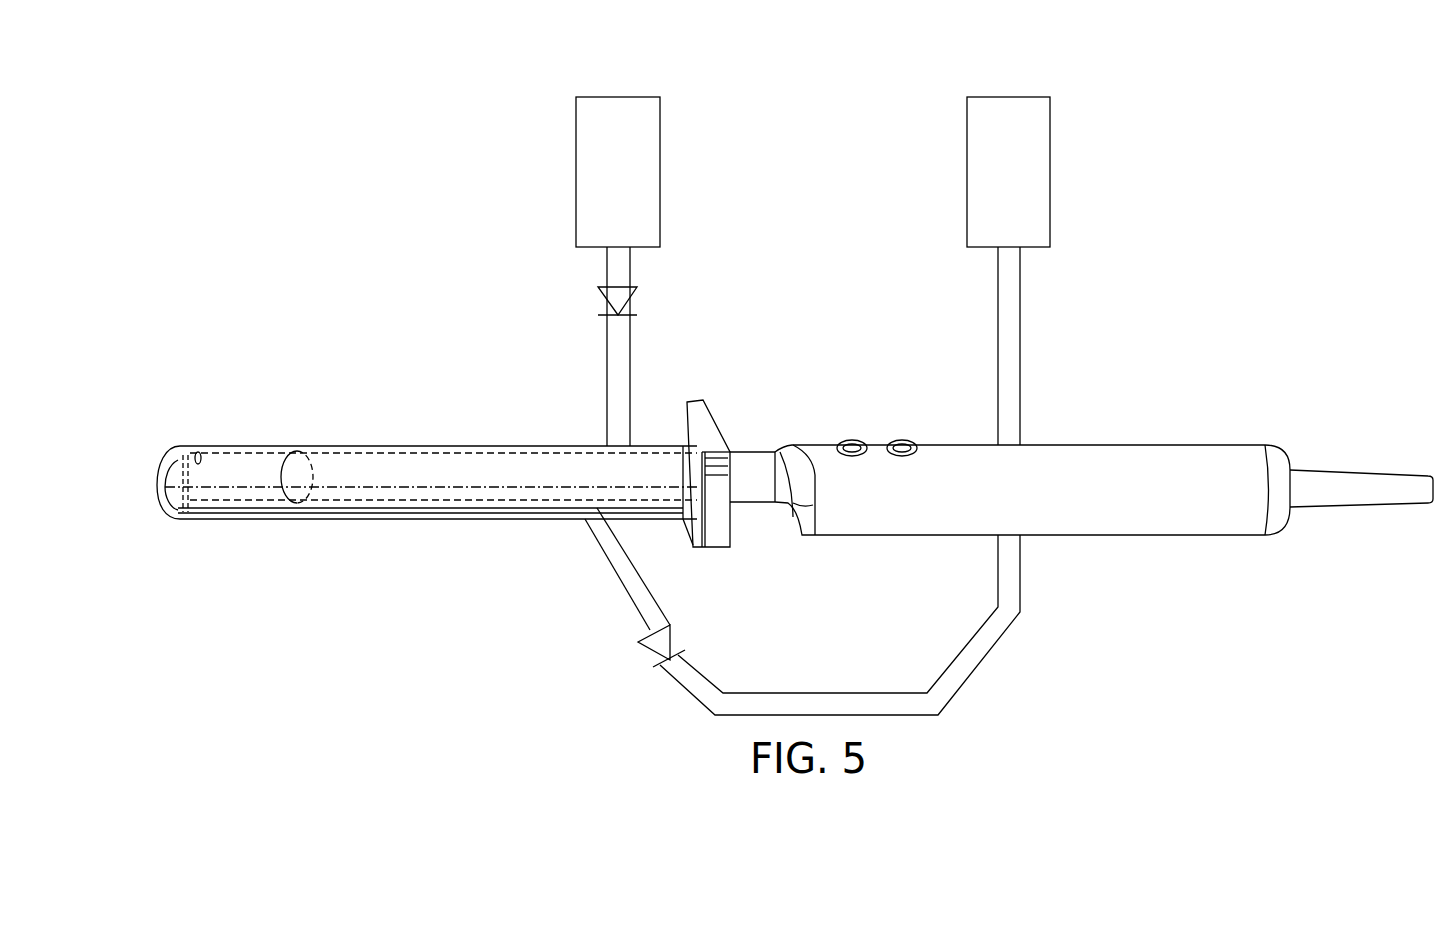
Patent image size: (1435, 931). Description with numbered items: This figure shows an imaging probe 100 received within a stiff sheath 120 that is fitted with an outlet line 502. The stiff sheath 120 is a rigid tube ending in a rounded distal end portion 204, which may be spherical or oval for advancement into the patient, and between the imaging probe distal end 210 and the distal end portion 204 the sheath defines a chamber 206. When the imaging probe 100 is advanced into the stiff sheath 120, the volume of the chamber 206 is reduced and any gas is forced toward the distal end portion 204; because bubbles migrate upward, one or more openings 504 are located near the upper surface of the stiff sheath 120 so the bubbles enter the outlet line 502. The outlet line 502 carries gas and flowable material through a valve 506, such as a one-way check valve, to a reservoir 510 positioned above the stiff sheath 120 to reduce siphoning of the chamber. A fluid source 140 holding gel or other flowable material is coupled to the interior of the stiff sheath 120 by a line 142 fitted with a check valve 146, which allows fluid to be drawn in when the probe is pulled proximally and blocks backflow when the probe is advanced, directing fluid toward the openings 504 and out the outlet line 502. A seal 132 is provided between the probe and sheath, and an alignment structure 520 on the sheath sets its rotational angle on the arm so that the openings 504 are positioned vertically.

The imaging probe 100 is at (503, 463).
The stiff sheath 120 is at (283, 473).
The seal 132 is at (678, 477).
The fluid source 140 is at (640, 175).
The line 142 is at (630, 343).
The check valve 146 is at (605, 298).
The distal end portion 204 is at (157, 487).
The chamber 206 is at (210, 447).
The imaging probe distal end 210 is at (283, 475).
The outlet line 502 is at (620, 573).
The openings 504 is at (202, 460).
The valve 506 is at (648, 647).
The reservoir 510 is at (1037, 177).
The alignment structure 520 is at (707, 430).